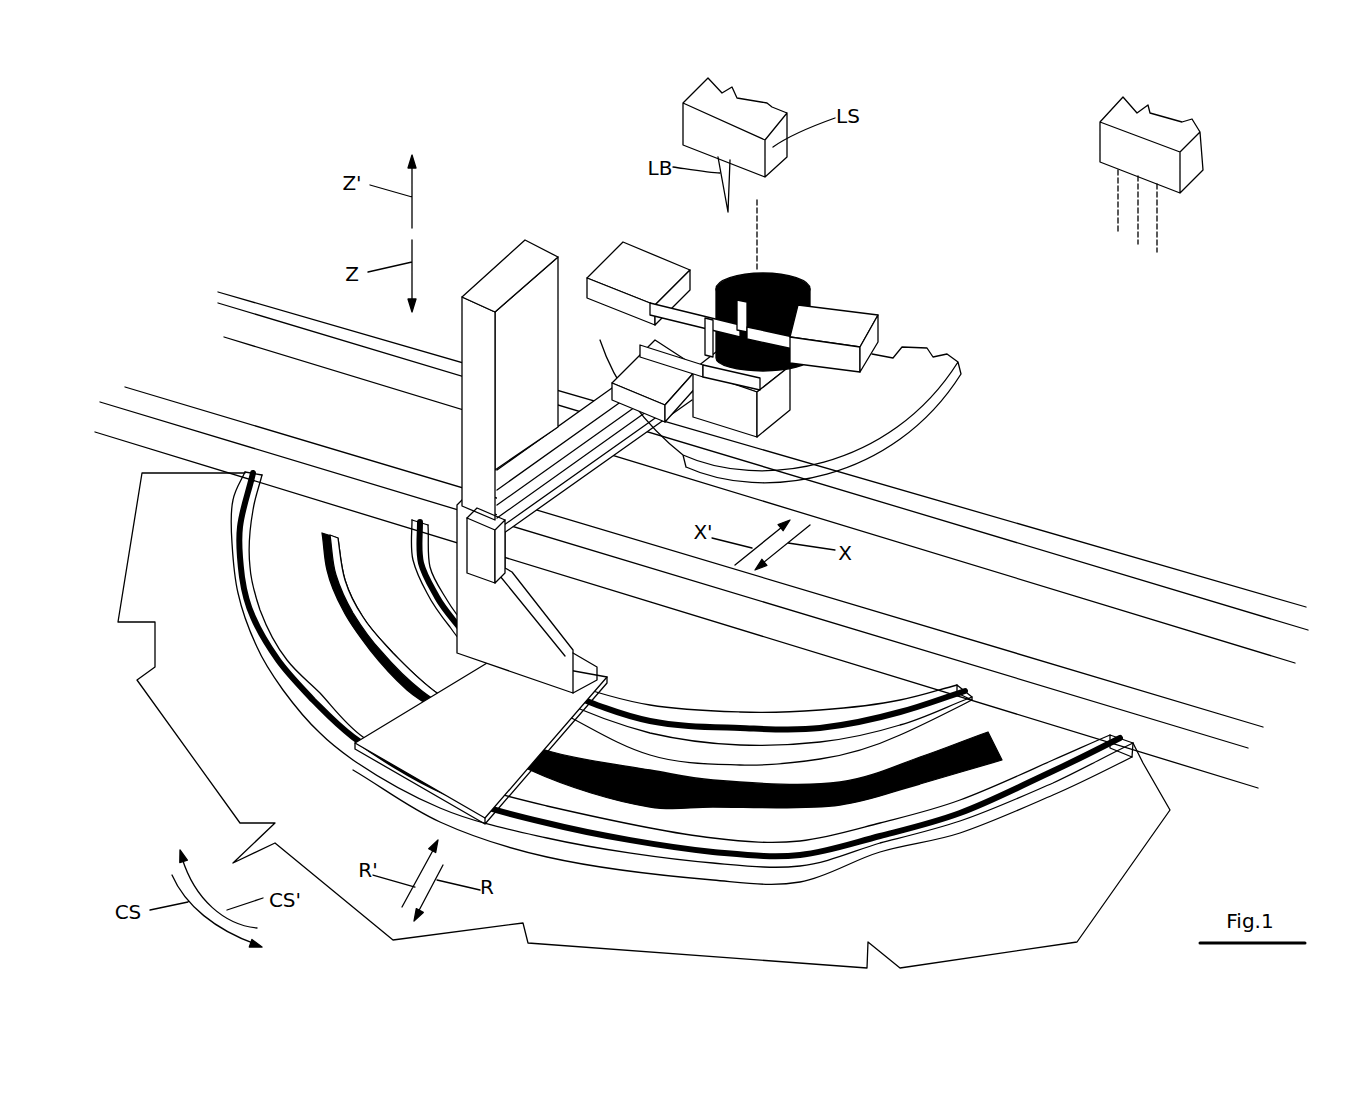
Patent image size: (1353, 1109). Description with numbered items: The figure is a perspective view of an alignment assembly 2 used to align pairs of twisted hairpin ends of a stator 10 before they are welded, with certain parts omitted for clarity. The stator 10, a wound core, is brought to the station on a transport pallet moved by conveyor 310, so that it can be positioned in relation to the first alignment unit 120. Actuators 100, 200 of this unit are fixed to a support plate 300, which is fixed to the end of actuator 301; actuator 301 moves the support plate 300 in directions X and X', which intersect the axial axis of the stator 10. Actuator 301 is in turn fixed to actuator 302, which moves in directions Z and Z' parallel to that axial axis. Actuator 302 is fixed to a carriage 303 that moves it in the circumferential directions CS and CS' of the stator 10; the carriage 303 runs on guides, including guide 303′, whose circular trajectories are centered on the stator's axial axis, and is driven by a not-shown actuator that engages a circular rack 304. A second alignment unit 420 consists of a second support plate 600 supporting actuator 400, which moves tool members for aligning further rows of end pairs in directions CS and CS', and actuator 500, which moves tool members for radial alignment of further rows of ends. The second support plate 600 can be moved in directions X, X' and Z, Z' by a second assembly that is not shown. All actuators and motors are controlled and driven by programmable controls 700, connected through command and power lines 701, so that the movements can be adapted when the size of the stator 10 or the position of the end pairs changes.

The machine tool 2 is at (978, 484).
The stator 10 is at (793, 277).
The actuator 100 is at (650, 377).
The first alignment unit 120 is at (607, 200).
The actuator 200 is at (625, 265).
The support plate 300 is at (537, 392).
The actuator 301 is at (597, 470).
The actuator 302 is at (467, 453).
The carriage 303 is at (405, 757).
The guide 303′ is at (960, 843).
The circular rack 304 is at (727, 817).
The conveyor 310 is at (1195, 546).
The actuator 400 is at (740, 405).
The second alignment unit 420 is at (960, 318).
The actuator 500 is at (852, 317).
The second support plate 600 is at (902, 393).
The controls 700 is at (1112, 140).
The command and power lines 701 is at (1196, 236).